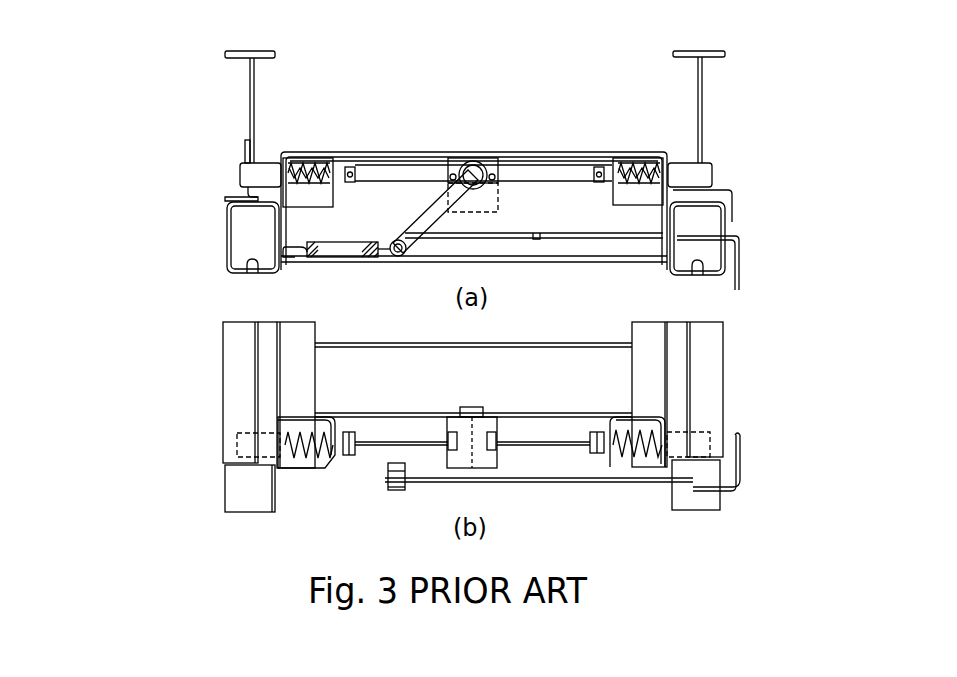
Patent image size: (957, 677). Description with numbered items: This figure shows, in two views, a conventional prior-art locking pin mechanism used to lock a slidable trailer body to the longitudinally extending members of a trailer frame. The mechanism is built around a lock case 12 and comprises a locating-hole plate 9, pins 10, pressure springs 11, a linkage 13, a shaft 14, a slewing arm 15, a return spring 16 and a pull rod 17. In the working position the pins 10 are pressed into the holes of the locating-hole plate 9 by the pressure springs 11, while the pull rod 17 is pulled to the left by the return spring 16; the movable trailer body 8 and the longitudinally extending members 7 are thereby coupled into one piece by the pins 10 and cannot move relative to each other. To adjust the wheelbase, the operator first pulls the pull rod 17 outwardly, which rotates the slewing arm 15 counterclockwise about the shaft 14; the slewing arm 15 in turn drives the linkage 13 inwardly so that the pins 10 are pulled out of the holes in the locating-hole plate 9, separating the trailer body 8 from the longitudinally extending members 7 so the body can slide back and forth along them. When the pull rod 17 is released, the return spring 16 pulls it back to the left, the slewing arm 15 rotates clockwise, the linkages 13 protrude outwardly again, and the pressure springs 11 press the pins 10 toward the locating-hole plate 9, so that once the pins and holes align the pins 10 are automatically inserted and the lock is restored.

The longitudinally extending member 7 is at (250, 107).
The movable trailer body 8 is at (227, 240).
The locating-hole plate 9 is at (245, 153).
The pin 10 is at (240, 176).
The pressure spring 11 is at (313, 165).
The lock case 12 is at (338, 163).
The linkage 13 is at (403, 165).
The shaft 14 is at (490, 158).
The slewing arm 15 is at (492, 183).
The return spring 16 is at (300, 252).
The pull rod 17 is at (580, 233).